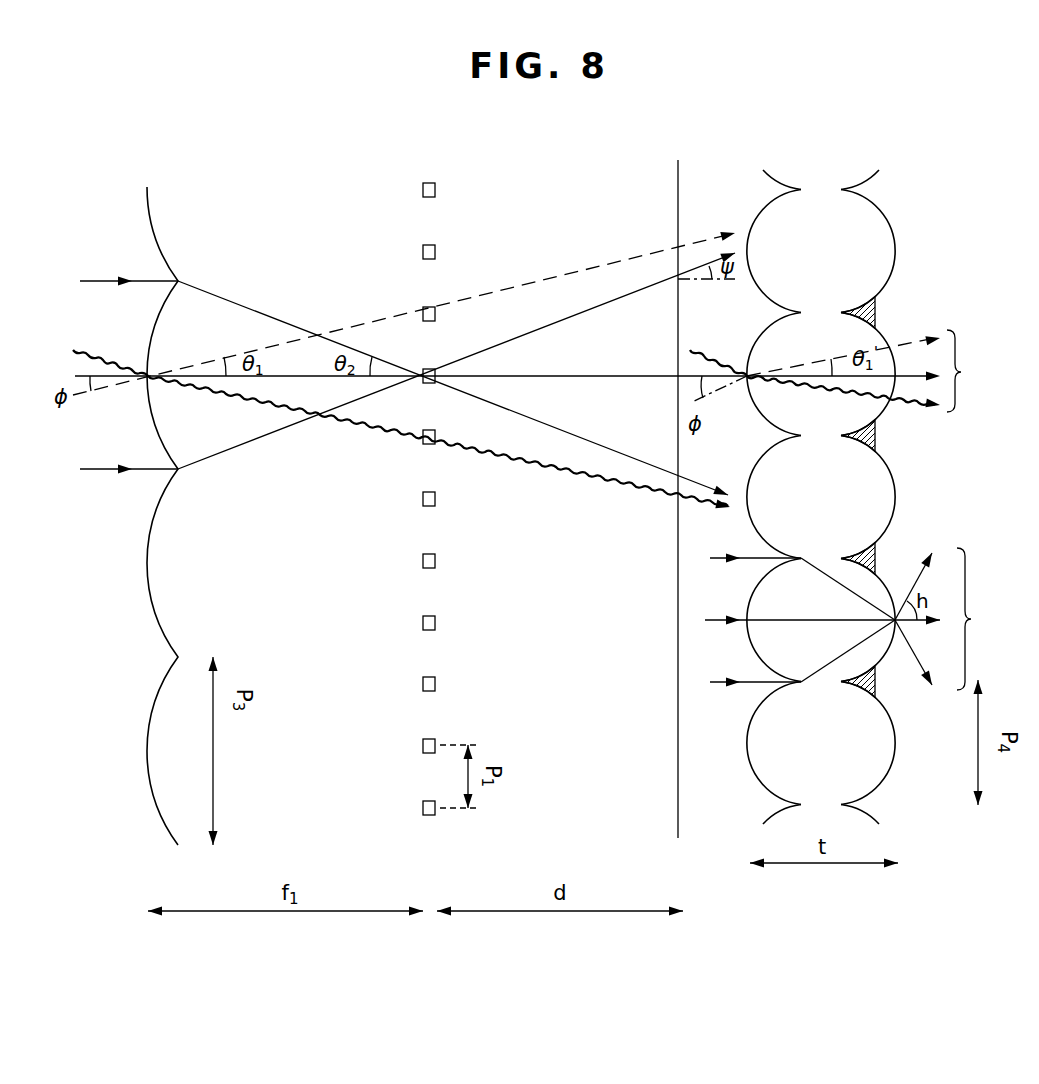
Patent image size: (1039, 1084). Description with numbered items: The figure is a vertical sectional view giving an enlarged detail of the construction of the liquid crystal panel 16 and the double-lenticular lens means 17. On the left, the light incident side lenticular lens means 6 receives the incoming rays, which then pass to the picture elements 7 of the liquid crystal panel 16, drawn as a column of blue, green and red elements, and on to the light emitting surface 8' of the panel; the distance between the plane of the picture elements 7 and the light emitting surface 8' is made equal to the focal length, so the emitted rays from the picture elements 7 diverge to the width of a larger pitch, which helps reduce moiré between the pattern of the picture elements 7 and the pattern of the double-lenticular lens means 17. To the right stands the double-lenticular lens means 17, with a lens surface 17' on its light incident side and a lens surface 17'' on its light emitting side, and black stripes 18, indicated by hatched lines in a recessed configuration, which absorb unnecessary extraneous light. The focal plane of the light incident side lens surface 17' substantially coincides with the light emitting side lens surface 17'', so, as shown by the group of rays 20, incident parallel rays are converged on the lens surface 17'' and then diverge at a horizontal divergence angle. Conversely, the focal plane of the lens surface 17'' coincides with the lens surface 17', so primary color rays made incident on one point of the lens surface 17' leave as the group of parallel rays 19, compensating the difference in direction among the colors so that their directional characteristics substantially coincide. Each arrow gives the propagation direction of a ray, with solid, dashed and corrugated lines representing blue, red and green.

The light incident side lenticular lens means 6 is at (148, 598).
The picture elements 7 is at (437, 189).
The light emitting surface 8' is at (640, 499).
The liquid crystal panel 16 is at (143, 158).
The double-lenticular lens means 17 is at (823, 466).
The light incident side lens surface 17' is at (748, 497).
The light emitting side lens surface 17'' is at (896, 497).
The black stripes 18 is at (878, 565).
The group of parallel rays 19 is at (975, 371).
The group of rays 20 is at (986, 619).